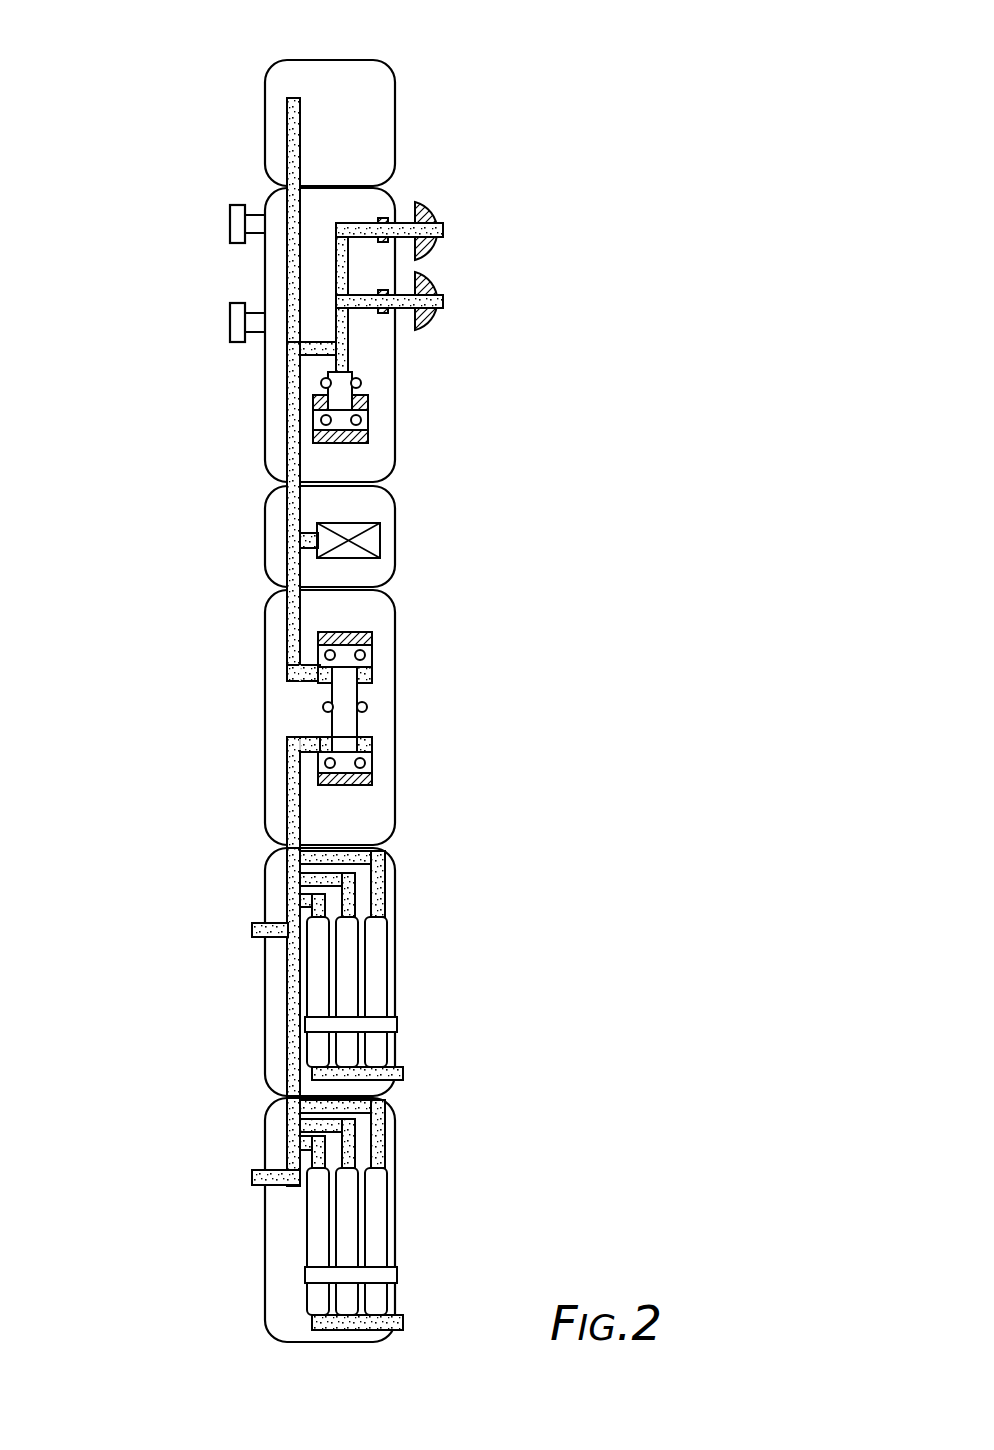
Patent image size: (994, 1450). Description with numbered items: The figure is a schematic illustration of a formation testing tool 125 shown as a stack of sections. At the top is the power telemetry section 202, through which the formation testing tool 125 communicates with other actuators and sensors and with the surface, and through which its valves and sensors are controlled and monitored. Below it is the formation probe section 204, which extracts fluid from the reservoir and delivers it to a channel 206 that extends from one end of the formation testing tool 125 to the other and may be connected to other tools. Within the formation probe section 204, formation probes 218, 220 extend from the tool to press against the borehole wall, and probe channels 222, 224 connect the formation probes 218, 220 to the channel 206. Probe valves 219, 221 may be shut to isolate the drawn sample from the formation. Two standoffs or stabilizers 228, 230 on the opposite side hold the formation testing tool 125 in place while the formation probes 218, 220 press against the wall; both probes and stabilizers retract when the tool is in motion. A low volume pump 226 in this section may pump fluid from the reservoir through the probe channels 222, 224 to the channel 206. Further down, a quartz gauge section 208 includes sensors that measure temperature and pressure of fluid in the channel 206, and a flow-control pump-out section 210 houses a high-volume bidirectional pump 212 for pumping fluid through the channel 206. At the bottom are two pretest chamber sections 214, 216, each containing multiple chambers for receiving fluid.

The formation testing tool 125 is at (583, 78).
The power telemetry section 202 is at (263, 98).
The formation probe section 204 is at (263, 393).
The channel 206 is at (263, 465).
The quartz gauge section 208 is at (263, 515).
The flow-control pump-out section 210 is at (263, 727).
The high-volume bidirectional pump 212 is at (323, 707).
The pretest chamber section 214 is at (263, 893).
The pretest chamber section 216 is at (263, 1143).
The formation probe 218 is at (440, 210).
The probe valve 219 is at (386, 222).
The formation probe 220 is at (437, 275).
The probe valve 221 is at (380, 310).
The probe channel 222 is at (365, 224).
The probe channel 224 is at (363, 310).
The low volume pump 226 is at (368, 420).
The standoff or stabilizer 228 is at (230, 215).
The standoff or stabilizer 230 is at (230, 313).